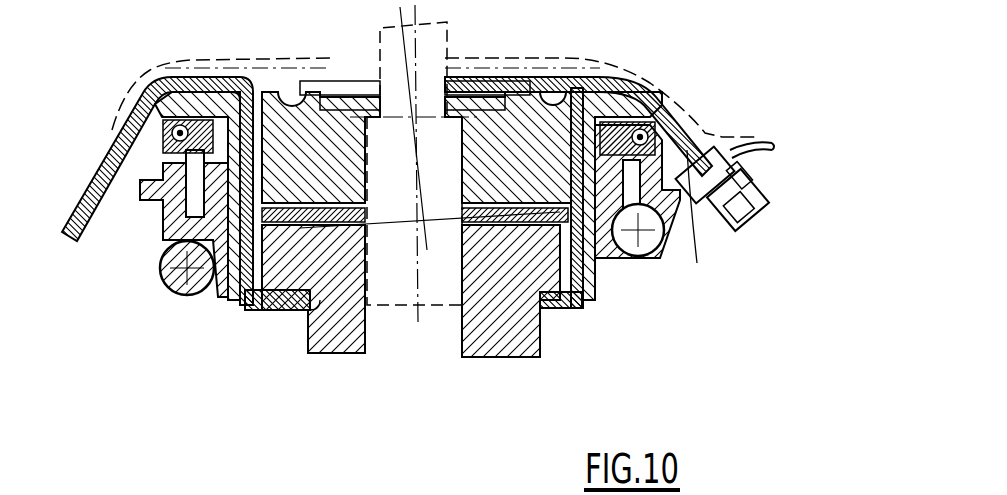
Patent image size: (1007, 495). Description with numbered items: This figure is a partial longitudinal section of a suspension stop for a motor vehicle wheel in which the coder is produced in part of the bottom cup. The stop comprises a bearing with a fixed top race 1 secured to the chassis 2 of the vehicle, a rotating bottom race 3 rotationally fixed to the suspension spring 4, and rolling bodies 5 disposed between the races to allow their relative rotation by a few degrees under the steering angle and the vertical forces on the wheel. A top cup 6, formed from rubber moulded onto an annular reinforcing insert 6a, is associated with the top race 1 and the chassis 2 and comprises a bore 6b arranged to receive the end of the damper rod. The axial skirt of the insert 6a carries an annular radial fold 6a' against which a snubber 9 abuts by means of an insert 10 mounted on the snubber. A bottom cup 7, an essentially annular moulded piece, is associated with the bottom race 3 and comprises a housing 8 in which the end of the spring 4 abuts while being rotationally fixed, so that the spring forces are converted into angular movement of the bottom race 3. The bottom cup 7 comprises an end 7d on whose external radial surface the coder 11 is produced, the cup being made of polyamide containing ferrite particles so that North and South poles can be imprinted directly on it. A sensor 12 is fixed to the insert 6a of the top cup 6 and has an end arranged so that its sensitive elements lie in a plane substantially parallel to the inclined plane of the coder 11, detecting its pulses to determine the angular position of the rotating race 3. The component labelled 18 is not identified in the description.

The fixed top race 1 is at (207, 117).
The chassis 2 is at (538, 58).
The rotating bottom race 3 is at (160, 163).
The suspension spring 4 is at (245, 300).
The rolling bodies 5 is at (165, 100).
The top cup 6 is at (307, 93).
The annular reinforcing insert 6a is at (503, 186).
The annular radial fold 6a' is at (399, 289).
The bore 6b is at (443, 320).
The bottom cup 7 is at (163, 227).
The end of the bottom cup 7d is at (672, 197).
The housing 8 is at (198, 266).
The snubber 9 is at (367, 330).
The insert 10 is at (303, 310).
The coder 11 is at (698, 227).
The sensor 12 is at (708, 173).
The connector 18 is at (760, 193).